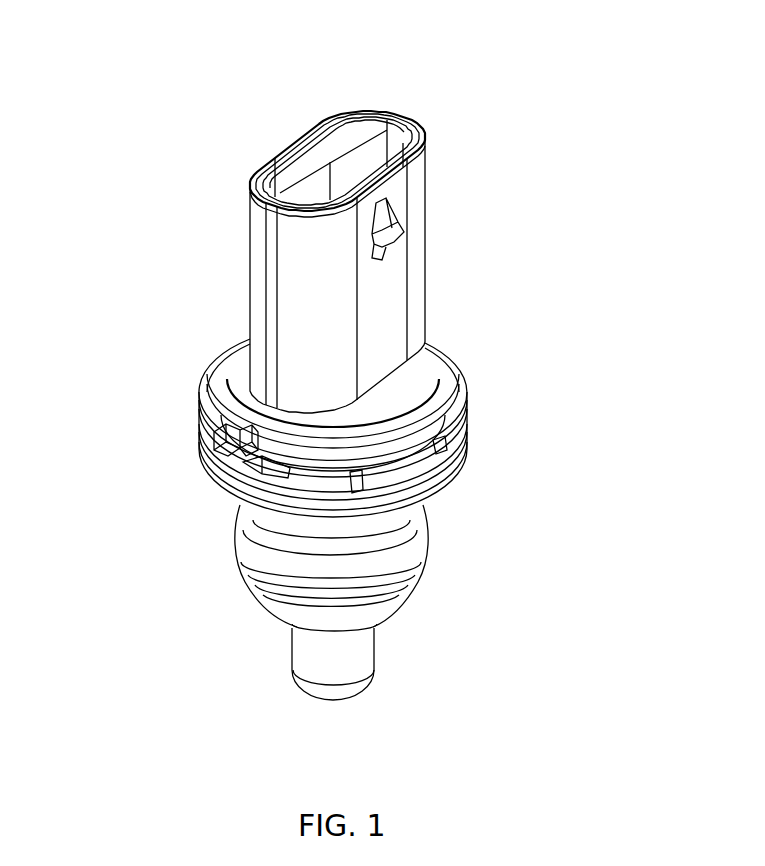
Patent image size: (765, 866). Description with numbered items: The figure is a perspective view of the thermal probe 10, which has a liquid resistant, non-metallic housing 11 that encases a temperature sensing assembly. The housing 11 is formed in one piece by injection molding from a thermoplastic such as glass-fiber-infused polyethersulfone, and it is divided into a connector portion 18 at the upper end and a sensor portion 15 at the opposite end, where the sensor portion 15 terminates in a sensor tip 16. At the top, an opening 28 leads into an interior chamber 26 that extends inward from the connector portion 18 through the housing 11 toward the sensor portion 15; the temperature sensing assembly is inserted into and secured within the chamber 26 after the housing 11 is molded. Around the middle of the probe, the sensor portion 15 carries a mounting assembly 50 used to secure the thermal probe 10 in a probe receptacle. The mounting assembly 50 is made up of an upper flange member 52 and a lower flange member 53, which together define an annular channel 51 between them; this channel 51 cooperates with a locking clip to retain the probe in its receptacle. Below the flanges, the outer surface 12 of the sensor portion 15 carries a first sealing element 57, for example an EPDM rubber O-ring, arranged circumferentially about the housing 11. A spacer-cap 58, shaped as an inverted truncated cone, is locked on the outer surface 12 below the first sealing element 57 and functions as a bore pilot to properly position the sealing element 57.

The thermal probe 10 is at (460, 56).
The housing 11 is at (277, 148).
The outer surface 12 is at (255, 566).
The sensor portion 15 is at (437, 578).
The sensor tip 16 is at (363, 653).
The connector portion 18 is at (435, 270).
The interior chamber 26 is at (312, 165).
The opening 28 is at (377, 125).
The mounting assembly 50 is at (493, 403).
The annular channel 51 is at (412, 490).
The upper flange member 52 is at (212, 361).
The lower flange member 53 is at (220, 478).
The first sealing element 57 is at (250, 540).
The spacer-cap 58 is at (274, 608).